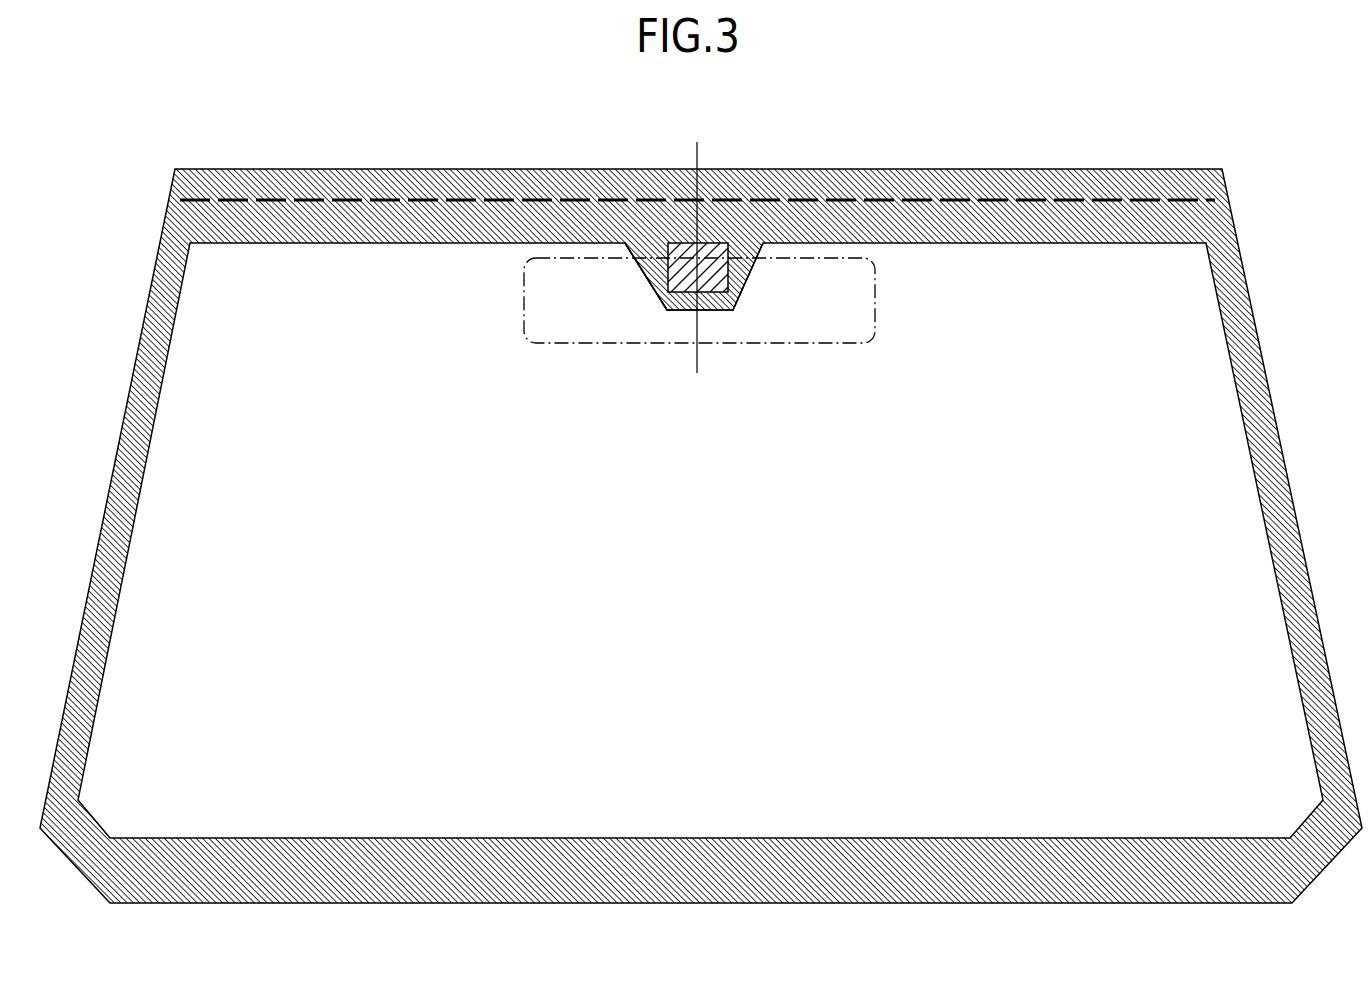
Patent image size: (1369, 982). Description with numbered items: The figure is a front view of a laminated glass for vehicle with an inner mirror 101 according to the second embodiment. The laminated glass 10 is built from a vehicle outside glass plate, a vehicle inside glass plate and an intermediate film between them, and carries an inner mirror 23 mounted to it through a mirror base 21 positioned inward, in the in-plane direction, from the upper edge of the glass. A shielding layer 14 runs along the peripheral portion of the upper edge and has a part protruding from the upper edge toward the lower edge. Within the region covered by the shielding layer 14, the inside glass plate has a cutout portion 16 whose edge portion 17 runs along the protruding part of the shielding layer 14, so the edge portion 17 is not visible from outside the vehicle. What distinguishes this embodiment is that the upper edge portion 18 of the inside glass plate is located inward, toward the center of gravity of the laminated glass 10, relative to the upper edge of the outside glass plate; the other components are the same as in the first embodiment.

The laminated glass for vehicle with an inner mirror 101 is at (183, 92).
The laminated glass 10 is at (138, 236).
The shielding layer 14 is at (280, 162).
The cutout portion 16 is at (722, 182).
The edge portion 17 is at (640, 214).
The upper edge portion 18 is at (518, 178).
The mirror base 21 is at (660, 306).
The inner mirror 23 is at (515, 338).